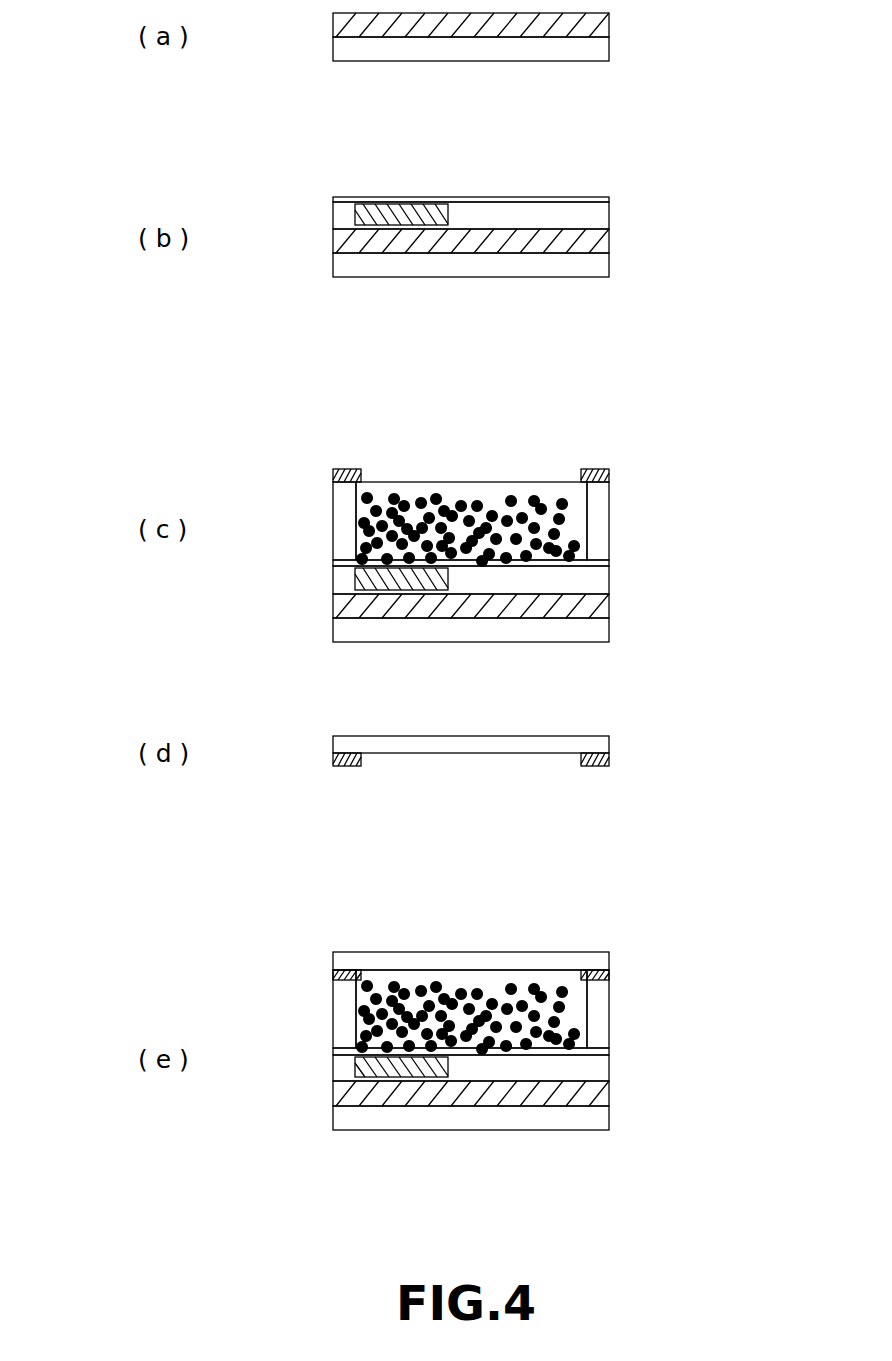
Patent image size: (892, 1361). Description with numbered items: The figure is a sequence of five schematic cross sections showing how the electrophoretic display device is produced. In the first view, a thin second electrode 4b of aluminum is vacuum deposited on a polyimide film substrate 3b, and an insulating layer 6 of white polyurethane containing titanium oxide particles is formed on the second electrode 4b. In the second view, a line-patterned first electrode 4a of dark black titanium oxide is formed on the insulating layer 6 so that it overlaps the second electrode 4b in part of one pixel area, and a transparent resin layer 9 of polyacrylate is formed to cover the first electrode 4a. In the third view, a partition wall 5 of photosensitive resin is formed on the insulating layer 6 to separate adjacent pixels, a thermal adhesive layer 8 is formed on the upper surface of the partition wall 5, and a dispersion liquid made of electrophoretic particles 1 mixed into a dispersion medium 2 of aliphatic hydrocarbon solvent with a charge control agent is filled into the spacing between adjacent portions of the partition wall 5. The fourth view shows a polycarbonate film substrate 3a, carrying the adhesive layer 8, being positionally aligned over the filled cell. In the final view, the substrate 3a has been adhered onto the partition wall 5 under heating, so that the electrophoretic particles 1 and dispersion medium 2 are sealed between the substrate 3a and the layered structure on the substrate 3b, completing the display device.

The electrophoretic particles 1 is at (398, 490).
The dispersion medium 2 is at (455, 492).
The substrate 3a is at (600, 748).
The substrate 3b is at (598, 50).
The first electrode 4a is at (396, 208).
The second electrode 4b is at (606, 22).
The partition wall 5 is at (597, 538).
The insulating layer 6 is at (598, 217).
The thermal adhesive layer 8 is at (610, 473).
The transparent resin layer 9 is at (535, 196).